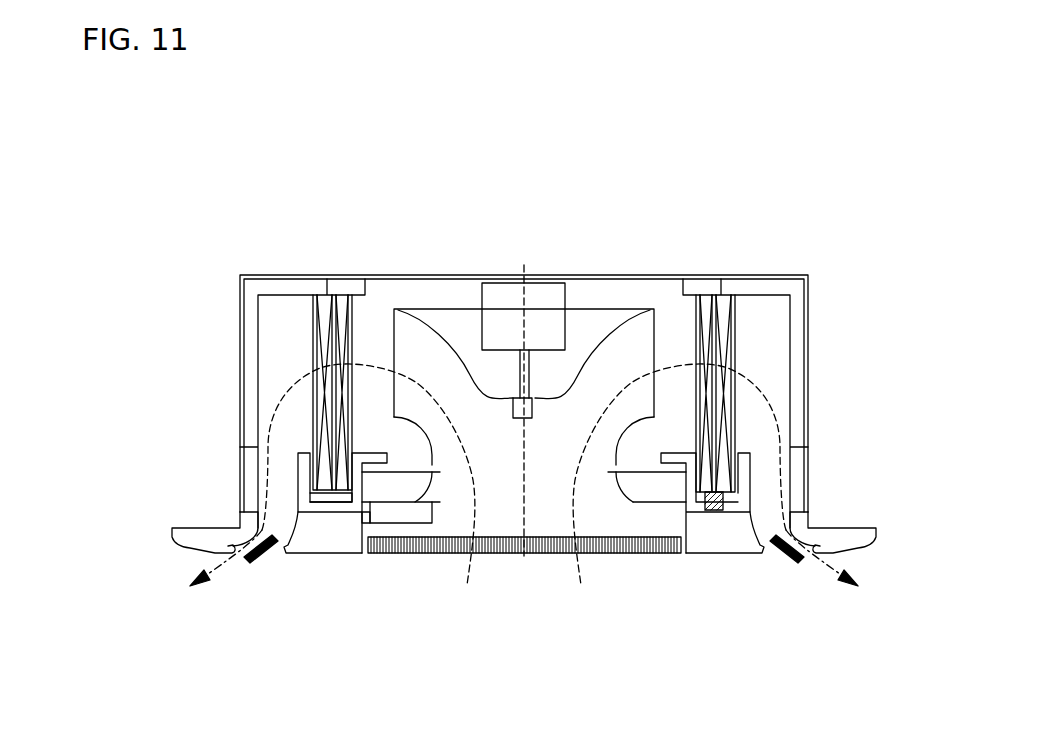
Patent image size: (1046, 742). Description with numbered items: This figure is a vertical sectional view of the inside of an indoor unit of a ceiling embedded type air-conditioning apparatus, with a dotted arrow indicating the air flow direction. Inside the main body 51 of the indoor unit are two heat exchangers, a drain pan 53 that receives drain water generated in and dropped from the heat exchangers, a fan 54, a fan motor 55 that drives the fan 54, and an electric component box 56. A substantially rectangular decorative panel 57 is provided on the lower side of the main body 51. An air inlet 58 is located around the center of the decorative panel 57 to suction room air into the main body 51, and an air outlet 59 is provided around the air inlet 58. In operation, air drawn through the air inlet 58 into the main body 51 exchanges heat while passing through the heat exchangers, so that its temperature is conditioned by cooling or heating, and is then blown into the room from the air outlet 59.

The main body 51 is at (633, 275).
The drain pan 53 is at (325, 507).
The fan 54 is at (446, 309).
The fan motor 55 is at (565, 302).
The electric component box 56 is at (407, 517).
The decorative panel 57 is at (190, 545).
The air inlet 58 is at (528, 555).
The air outlet 59 is at (272, 553).